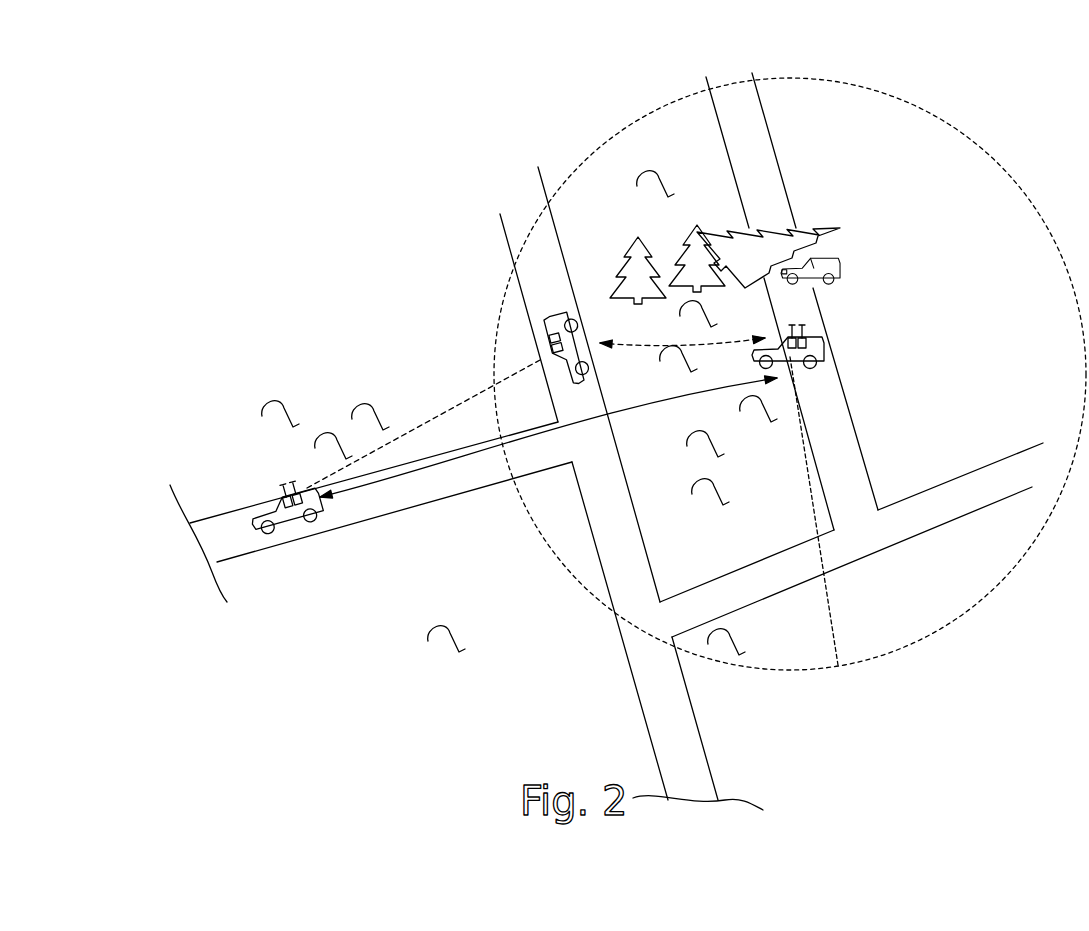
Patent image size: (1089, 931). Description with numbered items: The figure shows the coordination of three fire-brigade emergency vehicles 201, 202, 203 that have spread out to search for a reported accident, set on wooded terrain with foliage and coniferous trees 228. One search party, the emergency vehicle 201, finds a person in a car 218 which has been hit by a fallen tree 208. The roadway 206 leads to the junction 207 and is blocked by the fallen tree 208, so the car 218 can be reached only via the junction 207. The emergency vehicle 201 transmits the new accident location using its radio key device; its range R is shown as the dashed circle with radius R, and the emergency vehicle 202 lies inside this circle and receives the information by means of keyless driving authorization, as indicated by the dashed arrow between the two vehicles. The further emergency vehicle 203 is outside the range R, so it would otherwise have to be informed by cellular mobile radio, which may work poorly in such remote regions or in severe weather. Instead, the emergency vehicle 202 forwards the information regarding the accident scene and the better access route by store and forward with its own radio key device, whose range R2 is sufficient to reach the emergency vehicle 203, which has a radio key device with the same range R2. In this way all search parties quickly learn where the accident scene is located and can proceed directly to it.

The emergency vehicle 201 is at (844, 341).
The emergency vehicle 202 is at (504, 341).
The emergency vehicle 203 is at (237, 520).
The roadway 206 is at (773, 172).
The junction 207 is at (867, 527).
The fallen tree 208 is at (797, 233).
The car 218 is at (832, 255).
The coniferous trees 228 is at (640, 270).
The range R is at (825, 585).
The range R2 is at (420, 427).